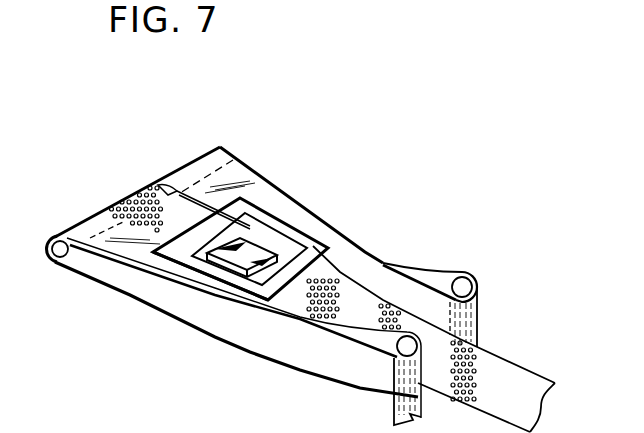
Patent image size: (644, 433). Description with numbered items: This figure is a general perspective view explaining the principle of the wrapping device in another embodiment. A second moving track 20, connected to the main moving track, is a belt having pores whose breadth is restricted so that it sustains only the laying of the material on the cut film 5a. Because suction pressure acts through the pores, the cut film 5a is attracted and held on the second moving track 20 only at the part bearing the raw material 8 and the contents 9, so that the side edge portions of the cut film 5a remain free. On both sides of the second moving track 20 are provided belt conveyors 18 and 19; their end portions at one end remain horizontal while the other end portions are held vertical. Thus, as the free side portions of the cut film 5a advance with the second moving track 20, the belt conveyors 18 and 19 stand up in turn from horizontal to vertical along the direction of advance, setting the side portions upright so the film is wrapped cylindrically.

The cut film 5a is at (313, 247).
The raw material 8 is at (260, 233).
The contents 9 is at (218, 262).
The belt conveyor 18 is at (83, 280).
The belt conveyor 19 is at (230, 183).
The second moving track 20 is at (148, 187).